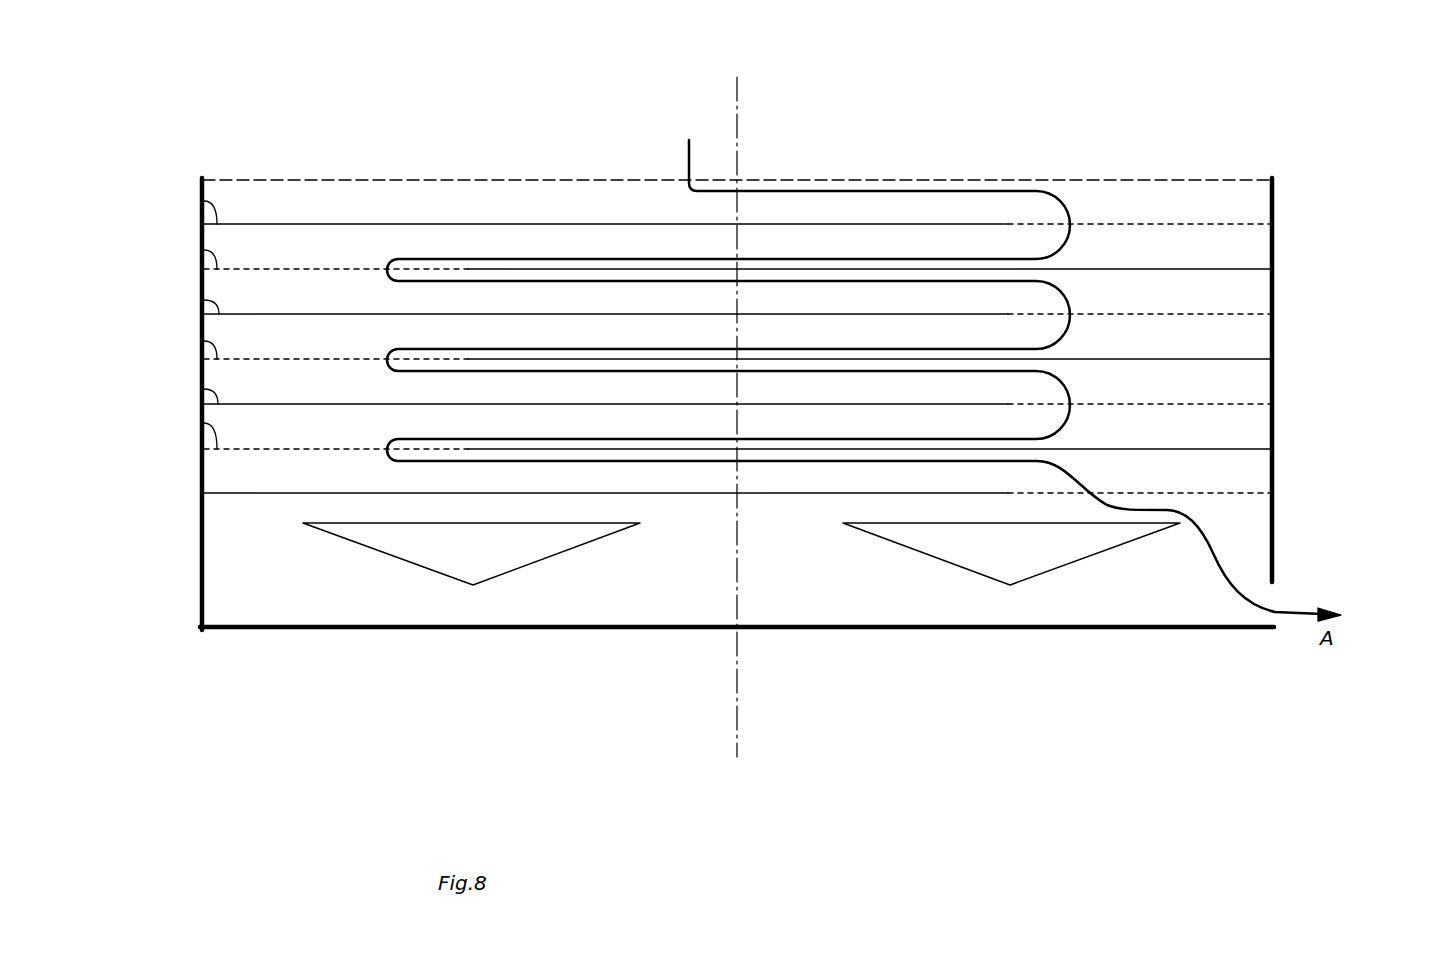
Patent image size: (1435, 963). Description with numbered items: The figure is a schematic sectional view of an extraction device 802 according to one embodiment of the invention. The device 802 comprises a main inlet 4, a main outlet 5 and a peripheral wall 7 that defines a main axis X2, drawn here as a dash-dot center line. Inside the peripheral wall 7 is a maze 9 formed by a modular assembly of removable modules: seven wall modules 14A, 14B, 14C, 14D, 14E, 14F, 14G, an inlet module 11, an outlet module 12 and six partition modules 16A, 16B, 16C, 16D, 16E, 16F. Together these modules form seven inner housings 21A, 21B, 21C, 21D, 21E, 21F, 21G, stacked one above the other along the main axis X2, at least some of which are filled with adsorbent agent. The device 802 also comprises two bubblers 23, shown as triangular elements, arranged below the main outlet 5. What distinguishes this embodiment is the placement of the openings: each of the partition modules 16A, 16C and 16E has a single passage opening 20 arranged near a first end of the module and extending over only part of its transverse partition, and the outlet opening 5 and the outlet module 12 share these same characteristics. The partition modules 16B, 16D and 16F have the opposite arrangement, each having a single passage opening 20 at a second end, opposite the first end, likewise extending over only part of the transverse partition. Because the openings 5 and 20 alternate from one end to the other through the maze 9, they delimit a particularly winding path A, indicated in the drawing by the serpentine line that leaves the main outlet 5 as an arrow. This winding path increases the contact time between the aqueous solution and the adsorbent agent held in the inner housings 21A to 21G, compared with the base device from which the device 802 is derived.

The main inlet 4 is at (1072, 180).
The main outlet 5 is at (727, 495).
The peripheral wall 7 is at (1278, 278).
The maze 9 is at (923, 332).
The inlet module 11 is at (494, 180).
The outlet module 12 is at (807, 494).
The wall module 14A is at (1275, 204).
The wall module 14B is at (1275, 252).
The wall module 14C is at (1275, 296).
The wall module 14D is at (1275, 343).
The wall module 14E is at (1275, 385).
The wall module 14F is at (1275, 423).
The wall module 14G is at (1275, 470).
The partition module 16A is at (203, 201).
The partition module 16B is at (203, 250).
The partition module 16C is at (203, 300).
The partition module 16D is at (203, 341).
The partition module 16E is at (203, 389).
The partition module 16F is at (203, 423).
The passage opening 20 is at (248, 271).
The inner housing 21A is at (310, 208).
The inner housing 21B is at (309, 252).
The inner housing 21C is at (310, 295).
The inner housing 21D is at (310, 338).
The inner housing 21E is at (309, 382).
The inner housing 21F is at (308, 426).
The inner housing 21G is at (310, 470).
The bubbler 23 is at (741, 554).
The extraction device 802 is at (1323, 158).
The main axis X2 is at (754, 419).